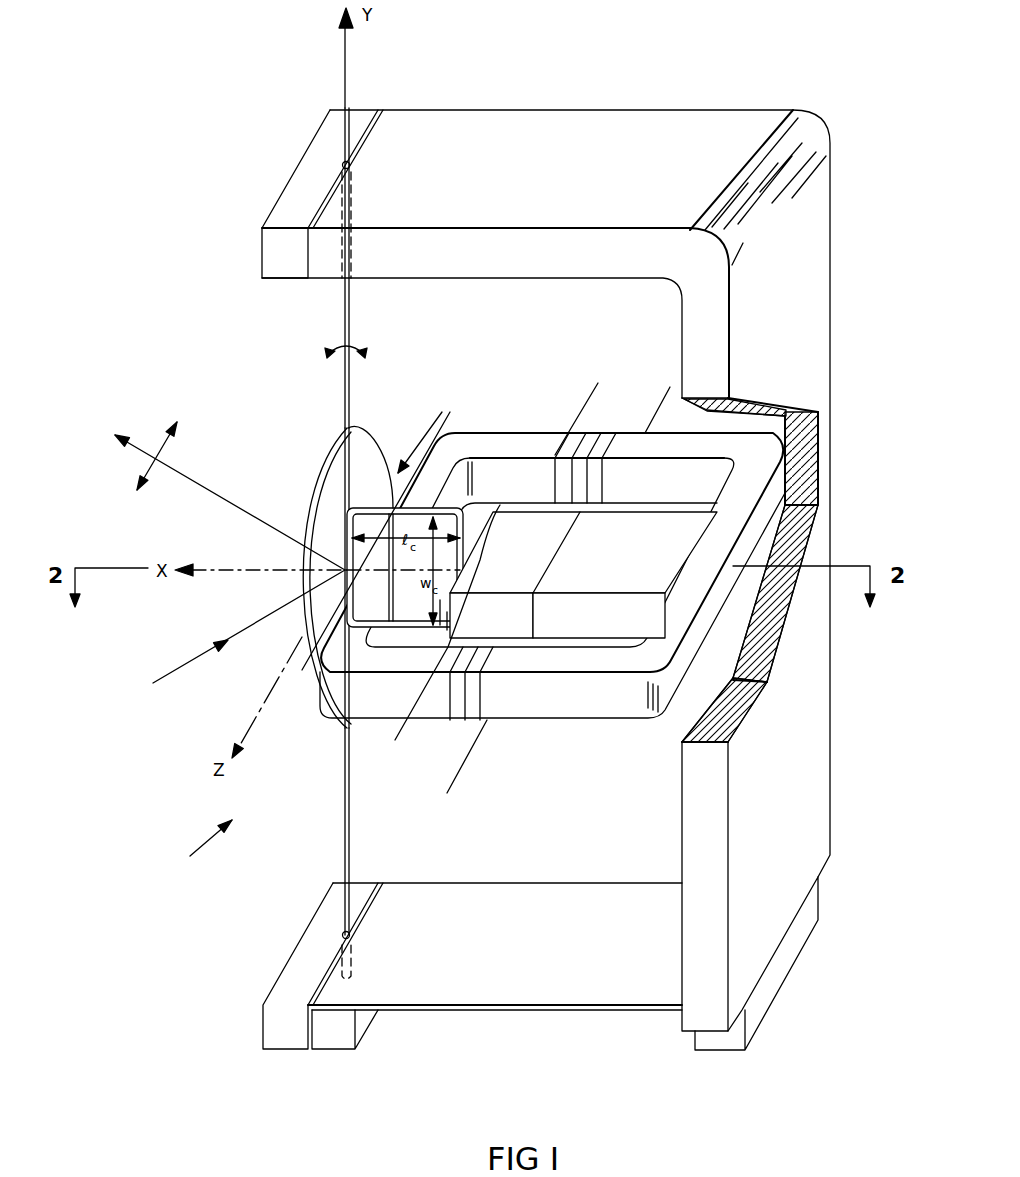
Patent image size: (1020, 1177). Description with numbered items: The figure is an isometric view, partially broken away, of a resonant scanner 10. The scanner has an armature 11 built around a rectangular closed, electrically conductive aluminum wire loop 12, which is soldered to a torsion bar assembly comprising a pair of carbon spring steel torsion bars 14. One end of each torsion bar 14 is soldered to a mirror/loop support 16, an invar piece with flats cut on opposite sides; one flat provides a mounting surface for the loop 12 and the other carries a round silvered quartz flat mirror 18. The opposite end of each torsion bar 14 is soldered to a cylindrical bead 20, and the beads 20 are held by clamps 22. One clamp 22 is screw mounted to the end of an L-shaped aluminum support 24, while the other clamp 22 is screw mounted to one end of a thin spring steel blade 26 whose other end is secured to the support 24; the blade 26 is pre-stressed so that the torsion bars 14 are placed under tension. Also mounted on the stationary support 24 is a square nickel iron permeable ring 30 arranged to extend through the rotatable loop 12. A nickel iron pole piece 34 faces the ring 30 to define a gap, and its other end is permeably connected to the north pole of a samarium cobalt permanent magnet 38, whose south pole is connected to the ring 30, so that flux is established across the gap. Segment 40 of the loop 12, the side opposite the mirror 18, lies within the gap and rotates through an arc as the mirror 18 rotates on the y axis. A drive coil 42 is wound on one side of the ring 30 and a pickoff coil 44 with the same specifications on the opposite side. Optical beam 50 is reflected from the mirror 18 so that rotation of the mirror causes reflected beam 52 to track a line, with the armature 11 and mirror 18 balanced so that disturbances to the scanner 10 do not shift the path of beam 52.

The scanner 10 is at (201, 848).
The armature 11 is at (382, 532).
The conductive coil or loop 12 is at (476, 474).
The torsion bars 14 is at (351, 320).
The mirror/loop support 16 is at (356, 468).
The mirror 18 is at (333, 452).
The cylindrical bead 20 is at (352, 163).
The clamps 22 is at (292, 183).
The L-shaped aluminum support 24 is at (822, 768).
The spring steel blade 26 is at (541, 885).
The permeable ring 30 is at (500, 436).
The pole piece 34 is at (500, 626).
The permanent magnet 38 is at (600, 628).
The segment of loop 40 is at (467, 530).
The drive coil 42 is at (598, 433).
The pickoff coil 44 is at (465, 720).
The optical beam 50 is at (200, 656).
The reflected beam 52 is at (238, 498).